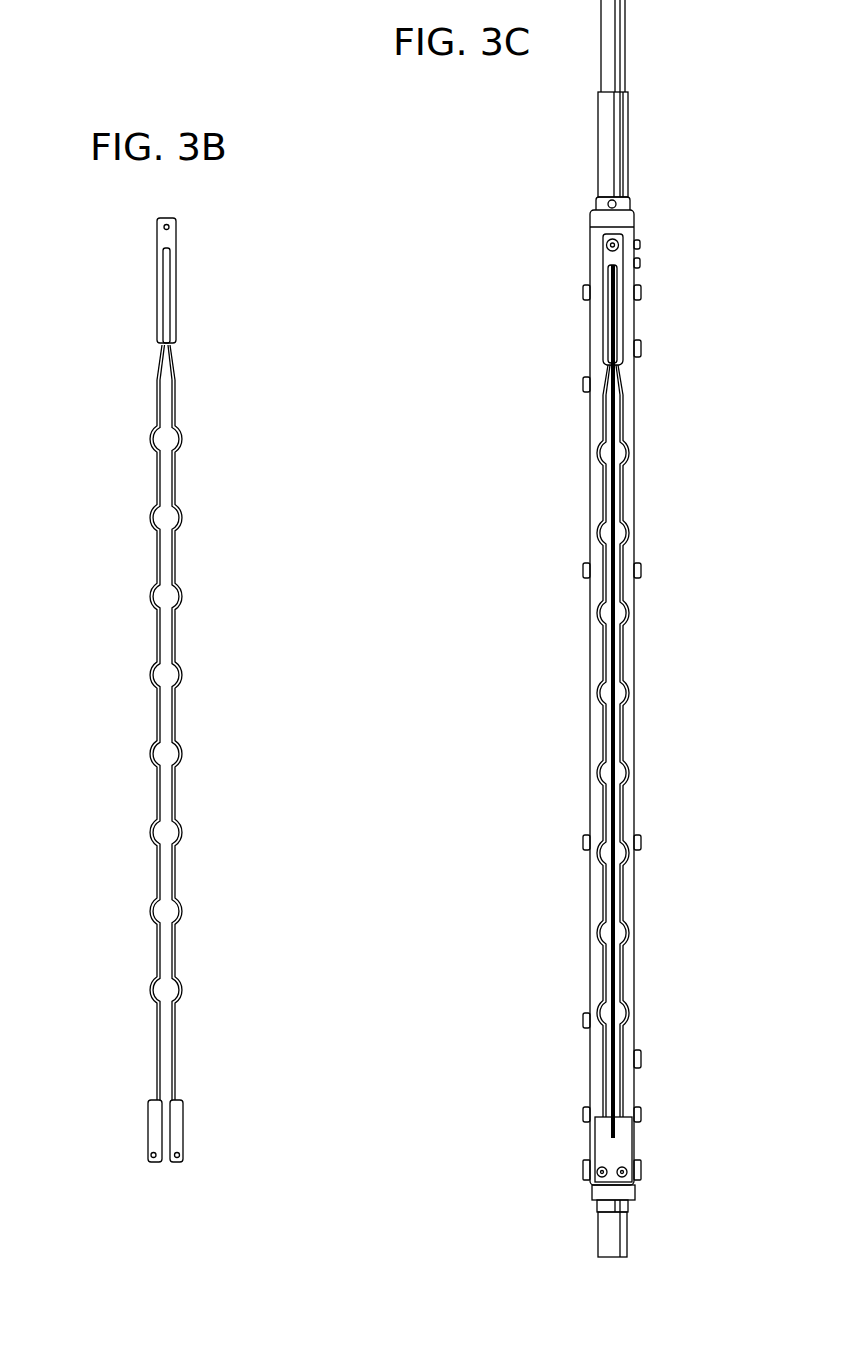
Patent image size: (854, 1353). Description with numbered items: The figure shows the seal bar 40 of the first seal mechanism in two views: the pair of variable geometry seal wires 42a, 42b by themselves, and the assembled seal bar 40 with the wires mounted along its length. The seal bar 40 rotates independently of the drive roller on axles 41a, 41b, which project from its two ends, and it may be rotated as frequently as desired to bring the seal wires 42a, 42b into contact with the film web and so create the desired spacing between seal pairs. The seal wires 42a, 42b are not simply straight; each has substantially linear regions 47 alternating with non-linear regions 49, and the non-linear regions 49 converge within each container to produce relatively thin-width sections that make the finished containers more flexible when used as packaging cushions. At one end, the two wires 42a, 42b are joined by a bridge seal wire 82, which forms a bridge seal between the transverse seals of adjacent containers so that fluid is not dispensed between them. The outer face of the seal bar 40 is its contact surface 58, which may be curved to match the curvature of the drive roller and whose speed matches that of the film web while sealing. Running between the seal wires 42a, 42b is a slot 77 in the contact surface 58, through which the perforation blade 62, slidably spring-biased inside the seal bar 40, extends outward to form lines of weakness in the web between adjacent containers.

In FIG. 3C, the seal bar 40 is at (590, 333).
In FIG. 3C, the axle 41a is at (626, 143).
In FIG. 3C, the axle 41b is at (621, 1234).
In FIG. 3B, the variable geometry seal wire 42a is at (177, 553).
In FIG. 3C, the variable geometry seal wire 42a is at (621, 735).
In FIG. 3B, the variable geometry seal wire 42b is at (157, 400).
In FIG. 3C, the variable geometry seal wire 42b is at (606, 655).
In FIG. 3B, the substantially linear region 47 is at (157, 636).
In FIG. 3B, the non-linear region 49 is at (151, 517).
In FIG. 3C, the contact surface 58 is at (633, 489).
In FIG. 3C, the perforation blade 62 is at (618, 612).
In FIG. 3C, the slot 77 is at (619, 453).
In FIG. 3B, the bridge seal wire 82 is at (177, 345).